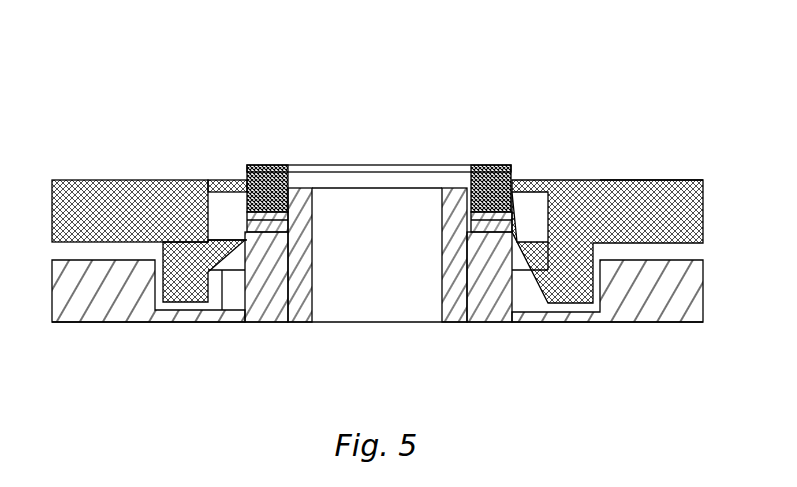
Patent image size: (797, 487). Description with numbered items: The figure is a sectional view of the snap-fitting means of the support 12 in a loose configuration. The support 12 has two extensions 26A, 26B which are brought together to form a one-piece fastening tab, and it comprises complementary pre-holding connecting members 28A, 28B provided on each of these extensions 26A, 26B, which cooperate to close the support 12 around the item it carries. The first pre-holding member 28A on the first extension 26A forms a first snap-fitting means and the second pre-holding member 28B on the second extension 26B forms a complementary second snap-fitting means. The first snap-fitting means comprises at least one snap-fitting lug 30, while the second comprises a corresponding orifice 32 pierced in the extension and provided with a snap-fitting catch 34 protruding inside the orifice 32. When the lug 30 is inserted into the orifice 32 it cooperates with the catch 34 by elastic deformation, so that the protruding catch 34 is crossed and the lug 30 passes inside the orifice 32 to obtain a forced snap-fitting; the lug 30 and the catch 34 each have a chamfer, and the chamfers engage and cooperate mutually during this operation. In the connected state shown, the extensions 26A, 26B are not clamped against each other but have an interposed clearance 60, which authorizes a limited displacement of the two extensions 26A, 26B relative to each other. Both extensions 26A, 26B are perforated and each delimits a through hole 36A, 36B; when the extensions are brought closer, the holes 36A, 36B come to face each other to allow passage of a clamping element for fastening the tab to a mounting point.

The support 12 is at (523, 64).
The first extension 26A is at (605, 190).
The second extension 26B is at (640, 262).
The first pre-holding member 28A is at (176, 180).
The second pre-holding member 28B is at (463, 320).
The snap-fitting lug 30 is at (200, 282).
The orifice 32 is at (225, 313).
The snap-fitting catch 34 is at (235, 200).
The through hole 36A is at (463, 176).
The through hole 36B is at (322, 222).
The clearance 60 is at (694, 180).